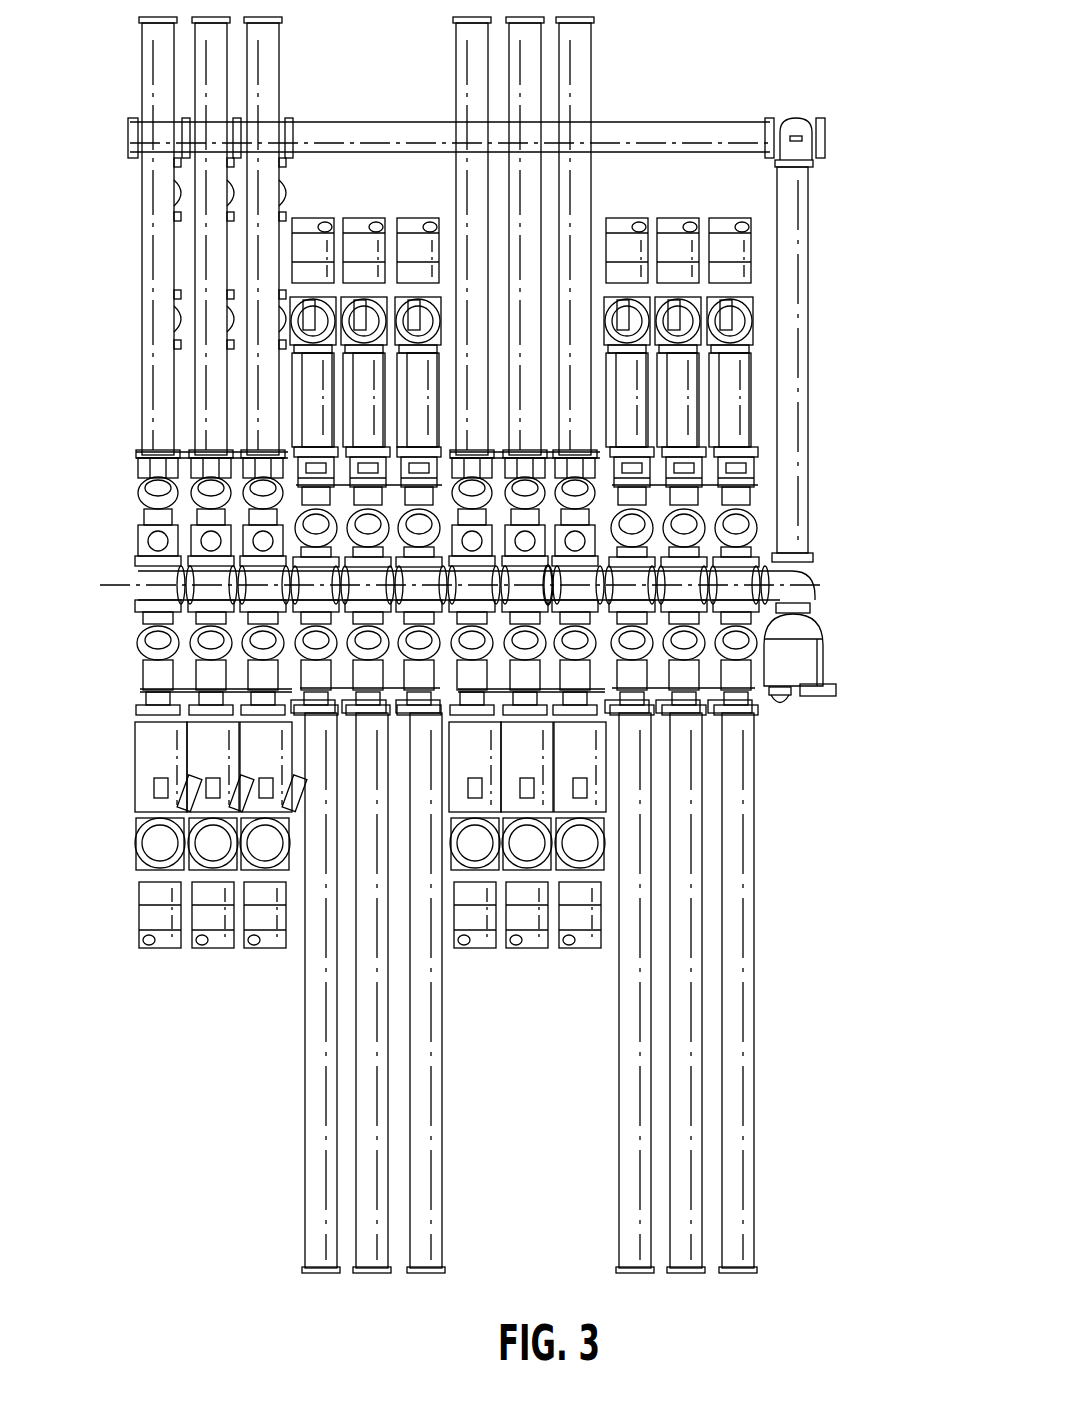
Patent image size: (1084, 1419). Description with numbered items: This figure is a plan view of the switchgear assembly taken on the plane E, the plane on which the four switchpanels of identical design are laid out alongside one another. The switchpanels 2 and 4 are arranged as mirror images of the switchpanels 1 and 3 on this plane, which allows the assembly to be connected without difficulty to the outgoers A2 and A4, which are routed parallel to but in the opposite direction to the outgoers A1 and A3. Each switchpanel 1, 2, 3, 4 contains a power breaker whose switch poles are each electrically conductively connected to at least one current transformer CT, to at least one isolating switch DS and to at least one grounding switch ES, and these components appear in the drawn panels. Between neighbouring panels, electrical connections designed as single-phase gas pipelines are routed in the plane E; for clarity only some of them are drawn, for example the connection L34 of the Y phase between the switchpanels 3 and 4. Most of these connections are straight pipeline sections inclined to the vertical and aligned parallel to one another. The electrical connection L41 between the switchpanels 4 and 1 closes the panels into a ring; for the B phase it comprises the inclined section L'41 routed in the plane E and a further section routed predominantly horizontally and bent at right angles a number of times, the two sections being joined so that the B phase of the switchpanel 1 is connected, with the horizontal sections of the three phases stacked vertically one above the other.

The outgoer A1 is at (246, 236).
The outgoer A2 is at (401, 986).
The outgoer A3 is at (560, 236).
The outgoer A4 is at (720, 986).
The switchpanel 1 is at (229, 1050).
The switchpanel 2 is at (377, 196).
The switchpanel 3 is at (545, 1050).
The switchpanel 4 is at (694, 196).
The isolating switch DS is at (155, 636).
The grounding switch ES is at (150, 690).
The current transformer CT is at (158, 762).
The plane E is at (818, 583).
The electrical connection L41 is at (820, 418).
The inclined section of the electrical connection L41(B) L'41 is at (867, 646).
The electrical connection of the Y phase L34 is at (548, 590).